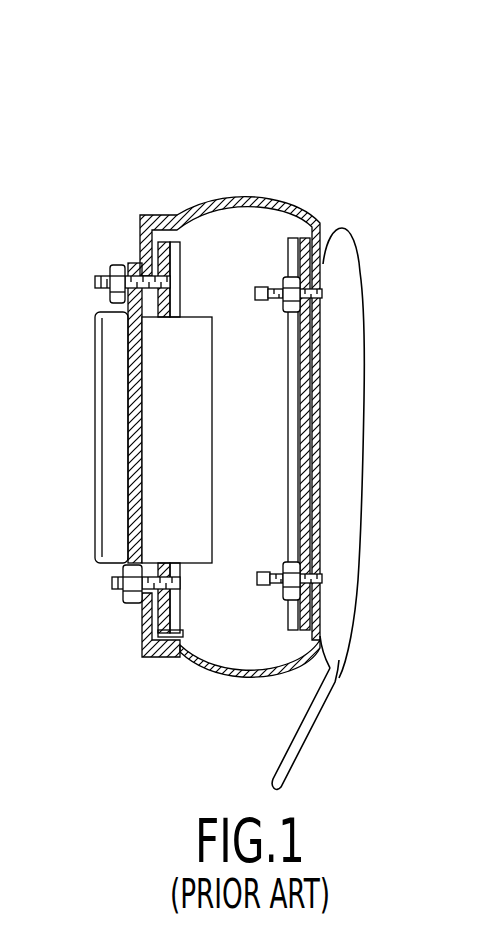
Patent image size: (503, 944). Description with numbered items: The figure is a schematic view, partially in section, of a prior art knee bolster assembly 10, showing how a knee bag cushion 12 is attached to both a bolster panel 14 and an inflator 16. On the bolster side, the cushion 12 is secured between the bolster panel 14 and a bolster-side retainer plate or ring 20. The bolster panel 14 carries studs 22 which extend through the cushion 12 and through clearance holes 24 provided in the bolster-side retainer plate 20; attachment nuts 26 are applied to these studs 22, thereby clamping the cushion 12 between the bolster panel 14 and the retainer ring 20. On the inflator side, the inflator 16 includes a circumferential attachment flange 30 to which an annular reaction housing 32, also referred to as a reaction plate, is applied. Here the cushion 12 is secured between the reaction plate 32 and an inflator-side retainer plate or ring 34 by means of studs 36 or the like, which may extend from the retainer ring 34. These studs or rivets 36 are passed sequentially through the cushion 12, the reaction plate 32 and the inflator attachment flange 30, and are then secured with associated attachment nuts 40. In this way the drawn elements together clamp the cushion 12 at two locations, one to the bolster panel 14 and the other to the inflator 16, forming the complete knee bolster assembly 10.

The knee bolster assembly 10 is at (346, 142).
The knee bag cushion 12 is at (252, 203).
The bolster panel 14 is at (352, 282).
The inflator 16 is at (190, 455).
The bolster-side retainer plate 20 is at (290, 464).
The studs 22 is at (255, 295).
The clearance holes 24 is at (323, 262).
The attachment nuts 26 is at (292, 274).
The attachment flange 30 is at (157, 252).
The reaction housing 32 is at (145, 660).
The inflator-side retainer plate 34 is at (184, 652).
The studs 36 is at (95, 282).
The attachment nuts 40 is at (108, 258).